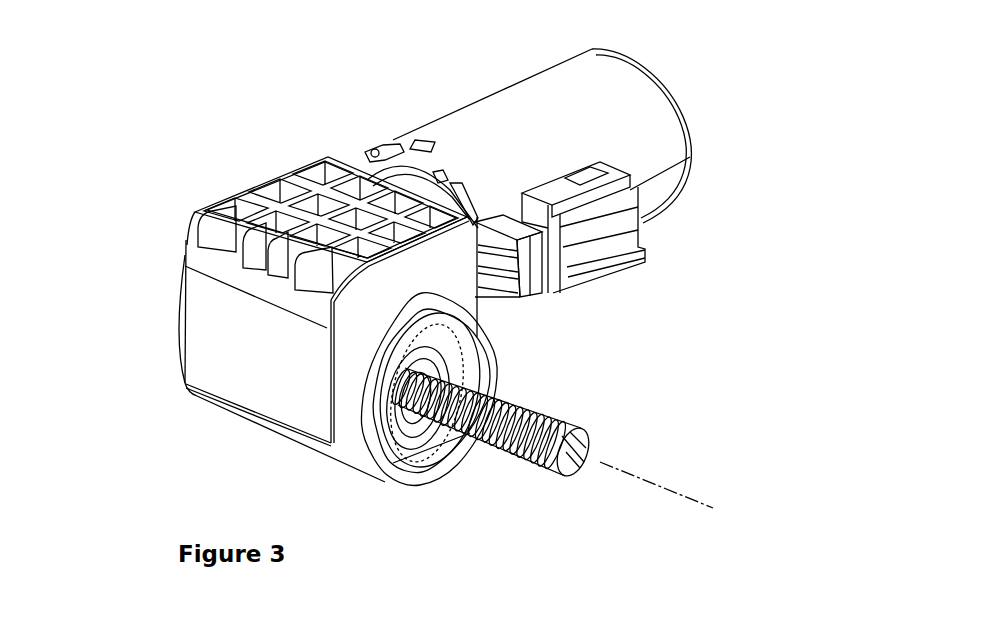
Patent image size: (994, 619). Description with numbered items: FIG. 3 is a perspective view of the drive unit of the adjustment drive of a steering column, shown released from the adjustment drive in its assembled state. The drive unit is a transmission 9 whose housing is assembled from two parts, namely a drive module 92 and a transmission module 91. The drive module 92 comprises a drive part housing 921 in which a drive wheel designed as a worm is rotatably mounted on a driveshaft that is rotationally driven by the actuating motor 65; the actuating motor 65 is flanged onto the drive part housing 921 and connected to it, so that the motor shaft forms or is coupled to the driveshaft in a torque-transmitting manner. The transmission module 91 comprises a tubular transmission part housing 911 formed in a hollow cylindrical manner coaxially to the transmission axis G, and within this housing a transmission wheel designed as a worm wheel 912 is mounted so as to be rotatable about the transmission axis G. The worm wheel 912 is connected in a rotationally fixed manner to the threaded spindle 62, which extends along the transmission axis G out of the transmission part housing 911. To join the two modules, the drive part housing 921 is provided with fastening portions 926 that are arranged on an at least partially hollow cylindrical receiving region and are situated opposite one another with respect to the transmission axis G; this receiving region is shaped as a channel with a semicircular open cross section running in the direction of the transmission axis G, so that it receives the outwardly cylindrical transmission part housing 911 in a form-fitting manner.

The transmission 9 is at (386, 92).
The transmission module 91 is at (391, 387).
The transmission part housing 911 is at (355, 448).
The worm wheel 912 is at (428, 342).
The drive module 92 is at (264, 291).
The drive part housing 921 is at (222, 268).
The fastening portions 926 is at (225, 383).
The threaded spindle 62 is at (545, 428).
The actuating motor 65 is at (640, 128).
The transmission axis G is at (703, 507).